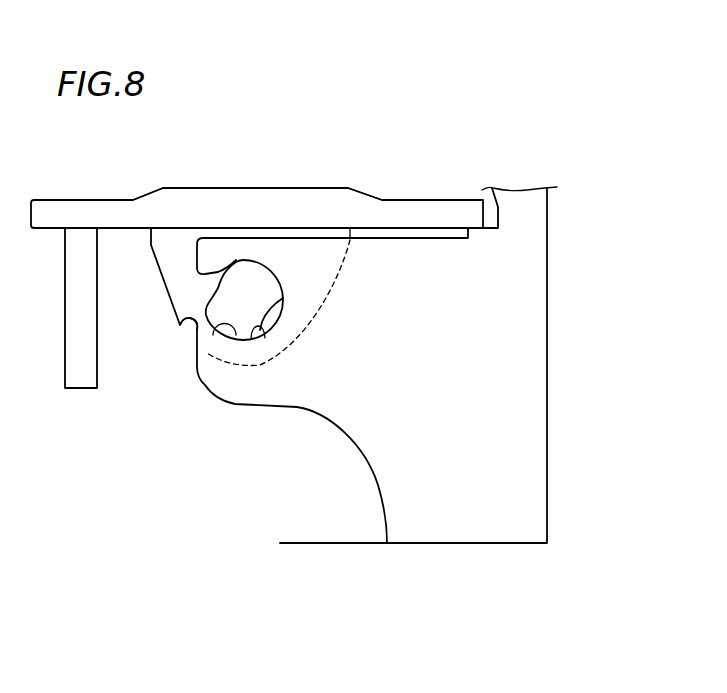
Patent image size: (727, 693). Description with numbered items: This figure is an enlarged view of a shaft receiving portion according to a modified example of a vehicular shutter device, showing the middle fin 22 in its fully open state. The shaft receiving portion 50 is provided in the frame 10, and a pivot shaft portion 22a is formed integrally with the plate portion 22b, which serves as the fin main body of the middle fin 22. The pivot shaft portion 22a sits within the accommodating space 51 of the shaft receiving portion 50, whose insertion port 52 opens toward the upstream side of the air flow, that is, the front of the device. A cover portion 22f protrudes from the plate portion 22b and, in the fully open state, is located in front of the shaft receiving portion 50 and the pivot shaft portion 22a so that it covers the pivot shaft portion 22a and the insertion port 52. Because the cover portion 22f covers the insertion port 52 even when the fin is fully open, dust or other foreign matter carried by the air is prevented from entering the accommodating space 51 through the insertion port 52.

The frame 10 is at (551, 262).
The middle fin 22 is at (262, 174).
The pivot shaft portion 22a is at (223, 308).
The plate portion 22b is at (184, 199).
The cover portion 22f is at (82, 384).
The shaft receiving portion 50 is at (218, 336).
The accommodating space 51 is at (247, 342).
The insertion port 52 is at (200, 325).